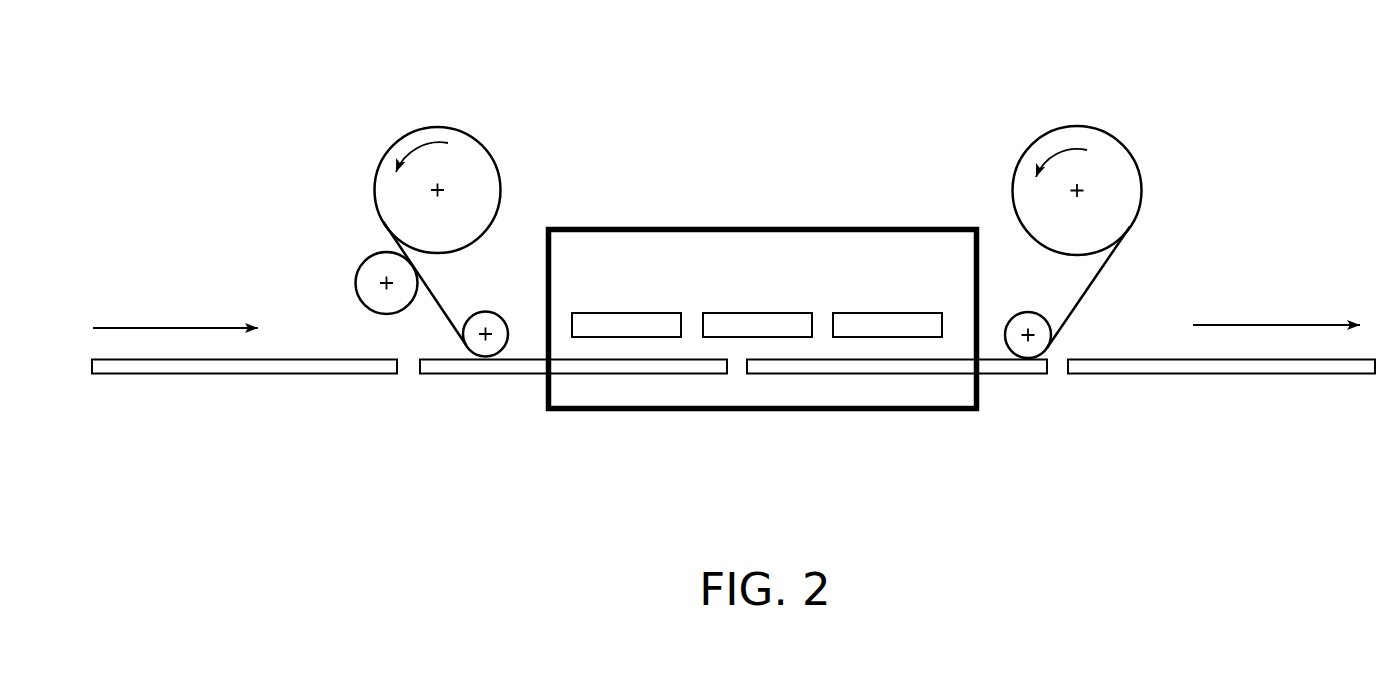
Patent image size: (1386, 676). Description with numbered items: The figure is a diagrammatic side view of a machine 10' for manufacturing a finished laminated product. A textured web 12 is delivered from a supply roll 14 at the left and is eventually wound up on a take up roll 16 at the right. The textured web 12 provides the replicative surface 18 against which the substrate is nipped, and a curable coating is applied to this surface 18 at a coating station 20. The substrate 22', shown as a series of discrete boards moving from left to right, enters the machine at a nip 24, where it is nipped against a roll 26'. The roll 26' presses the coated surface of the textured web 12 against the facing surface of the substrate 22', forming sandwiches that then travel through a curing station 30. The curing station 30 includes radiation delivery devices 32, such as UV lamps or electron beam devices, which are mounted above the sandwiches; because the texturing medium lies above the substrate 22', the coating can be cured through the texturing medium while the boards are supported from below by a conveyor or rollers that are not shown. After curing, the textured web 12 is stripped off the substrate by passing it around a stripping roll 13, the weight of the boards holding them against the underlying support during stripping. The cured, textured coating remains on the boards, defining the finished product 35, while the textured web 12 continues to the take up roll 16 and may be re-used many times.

The machine 10' is at (919, 76).
The textured web 12 is at (433, 300).
The stripping roll 13 is at (1024, 313).
The supply roll 14 is at (425, 108).
The take up roll 16 is at (1120, 115).
The replicative surface 18 is at (457, 323).
The coating station 20 is at (332, 248).
The substrate 22' is at (409, 411).
The nip 24 is at (457, 347).
The roll 26' is at (500, 313).
The curing station 30 is at (713, 437).
The radiation delivery devices 32 is at (875, 284).
The finished product 35 is at (1026, 392).